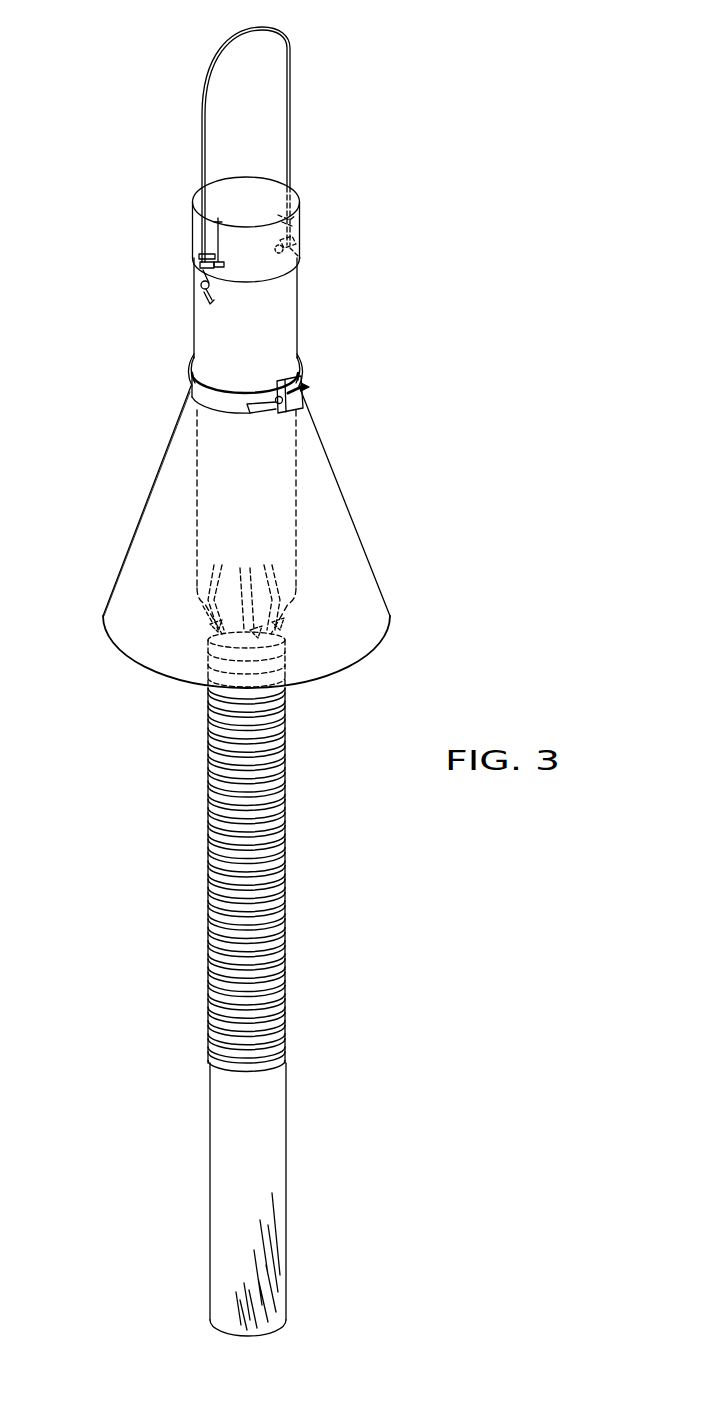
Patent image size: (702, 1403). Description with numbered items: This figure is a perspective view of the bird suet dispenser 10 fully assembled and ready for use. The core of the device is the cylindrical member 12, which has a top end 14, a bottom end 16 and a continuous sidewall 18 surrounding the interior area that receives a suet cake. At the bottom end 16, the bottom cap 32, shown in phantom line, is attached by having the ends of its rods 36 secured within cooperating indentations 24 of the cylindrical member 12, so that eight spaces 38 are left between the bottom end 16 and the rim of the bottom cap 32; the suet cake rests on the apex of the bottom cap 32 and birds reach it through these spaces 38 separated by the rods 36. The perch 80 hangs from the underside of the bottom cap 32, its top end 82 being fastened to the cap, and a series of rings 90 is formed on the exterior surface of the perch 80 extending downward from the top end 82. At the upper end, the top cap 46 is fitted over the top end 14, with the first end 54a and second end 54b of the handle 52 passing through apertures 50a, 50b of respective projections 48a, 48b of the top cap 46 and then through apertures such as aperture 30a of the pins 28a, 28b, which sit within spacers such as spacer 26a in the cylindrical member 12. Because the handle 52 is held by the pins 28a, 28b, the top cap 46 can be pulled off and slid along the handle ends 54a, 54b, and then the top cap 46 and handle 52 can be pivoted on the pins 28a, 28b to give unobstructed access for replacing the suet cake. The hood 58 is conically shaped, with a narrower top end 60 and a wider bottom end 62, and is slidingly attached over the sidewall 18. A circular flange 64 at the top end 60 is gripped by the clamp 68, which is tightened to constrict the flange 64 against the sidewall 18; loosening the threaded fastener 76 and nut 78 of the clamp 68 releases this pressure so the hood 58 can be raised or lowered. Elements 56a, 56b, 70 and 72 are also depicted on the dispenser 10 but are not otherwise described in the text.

The bird suet dispenser 10 is at (493, 410).
The cylindrical member 12 is at (274, 322).
The top end 14 is at (277, 243).
The bottom end 16 is at (275, 596).
The continuous sidewall 18 is at (269, 499).
The indentations 24 is at (244, 582).
The spacer 26a is at (242, 304).
The pin 28a is at (165, 287).
The pin 28b is at (255, 244).
The aperture 30a is at (166, 254).
The bottom cap 32 is at (285, 658).
The rods 36 is at (175, 608).
The spaces 38 is at (245, 602).
The top cap 46 is at (234, 187).
The projection 48a is at (222, 223).
The projection 48b is at (325, 199).
The aperture 50a is at (180, 223).
The aperture 50b is at (328, 242).
The handle 52 is at (229, 133).
The first end 54a is at (240, 269).
The second end 54b is at (327, 218).
The connector 56a is at (171, 314).
The connector 56b is at (331, 266).
The hood 58 is at (256, 501).
The top end 60 is at (147, 500).
The bottom end 62 is at (219, 626).
The circular flange 64 is at (281, 835).
The clamp 68 is at (213, 381).
The screw 70 is at (278, 444).
The clamp block 72 is at (325, 396).
The threaded fastener 76 is at (240, 424).
The nut 78 is at (330, 371).
The perch 80 is at (277, 1199).
The top end 82 is at (273, 667).
The rings 90 is at (281, 879).